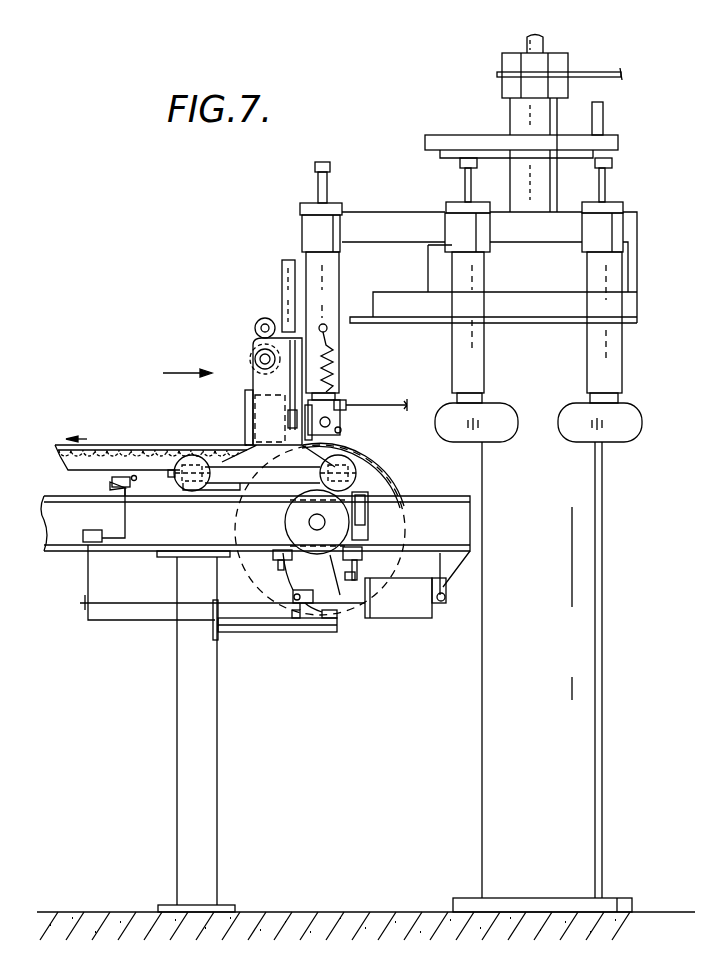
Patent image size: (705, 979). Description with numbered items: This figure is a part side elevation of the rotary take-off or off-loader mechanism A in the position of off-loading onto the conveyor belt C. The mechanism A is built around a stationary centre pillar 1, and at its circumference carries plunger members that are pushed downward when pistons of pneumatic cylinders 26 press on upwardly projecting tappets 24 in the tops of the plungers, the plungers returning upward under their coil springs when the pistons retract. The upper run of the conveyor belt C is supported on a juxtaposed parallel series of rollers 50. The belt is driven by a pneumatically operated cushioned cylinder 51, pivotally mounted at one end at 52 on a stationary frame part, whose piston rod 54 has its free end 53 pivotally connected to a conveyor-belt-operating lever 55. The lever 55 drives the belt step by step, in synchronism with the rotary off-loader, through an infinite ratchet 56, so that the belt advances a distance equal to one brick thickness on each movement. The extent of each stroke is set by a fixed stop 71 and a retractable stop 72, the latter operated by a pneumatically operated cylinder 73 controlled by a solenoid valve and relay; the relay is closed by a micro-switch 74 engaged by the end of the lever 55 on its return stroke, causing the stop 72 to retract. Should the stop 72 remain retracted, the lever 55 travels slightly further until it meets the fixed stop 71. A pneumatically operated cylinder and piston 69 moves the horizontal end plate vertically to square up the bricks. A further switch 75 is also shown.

The centre pillar 1 is at (493, 664).
The tappet 24 is at (330, 186).
The pneumatic cylinder 26 is at (333, 612).
The rollers 50 is at (97, 447).
The pneumatically operated cushioned cylinder 51 is at (420, 612).
The pivotal mounting 52 is at (442, 602).
The free end of piston rod 53 is at (300, 608).
The piston rod 54 is at (362, 600).
The conveyor-belt-operating lever 55 is at (295, 578).
The infinite ratchet 56 is at (285, 518).
The pneumatically operated cylinder and piston 69 is at (288, 283).
The fixed stop 71 is at (312, 590).
The retractable stop 72 is at (338, 595).
The pneumatically operated cylinder 73 is at (363, 510).
The micro-switch 74 is at (292, 612).
The switch 75 is at (110, 490).
The rotary take-off or off-loader mechanism A is at (440, 212).
The conveyor belt C is at (130, 448).